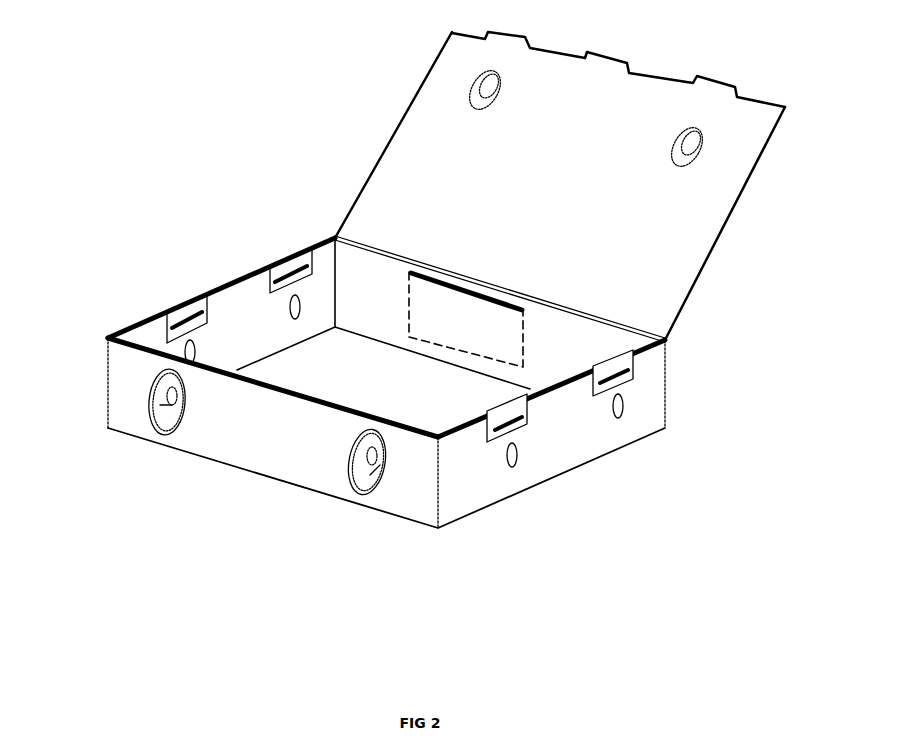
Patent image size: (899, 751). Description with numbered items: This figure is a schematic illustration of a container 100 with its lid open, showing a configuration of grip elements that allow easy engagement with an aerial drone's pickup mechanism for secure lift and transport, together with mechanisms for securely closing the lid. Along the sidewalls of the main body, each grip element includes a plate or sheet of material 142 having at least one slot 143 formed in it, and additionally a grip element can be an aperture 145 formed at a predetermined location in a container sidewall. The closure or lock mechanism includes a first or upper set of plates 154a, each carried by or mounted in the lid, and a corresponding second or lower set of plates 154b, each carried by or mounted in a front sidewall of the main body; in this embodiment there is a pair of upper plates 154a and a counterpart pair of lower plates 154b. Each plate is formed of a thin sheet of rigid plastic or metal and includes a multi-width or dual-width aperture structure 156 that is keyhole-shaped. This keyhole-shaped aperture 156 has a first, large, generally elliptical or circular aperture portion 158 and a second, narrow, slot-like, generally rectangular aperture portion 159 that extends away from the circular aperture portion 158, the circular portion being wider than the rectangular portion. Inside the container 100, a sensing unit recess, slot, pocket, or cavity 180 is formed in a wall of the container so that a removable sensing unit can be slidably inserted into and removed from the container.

The container 100 is at (100, 479).
The plate or sheet of material 142 is at (296, 262).
The slot 143 is at (280, 276).
The aperture 145 is at (290, 307).
The first or upper set of plates 154a is at (478, 99).
The second or lower set of plates 154b is at (187, 432).
The multi-width or dual-width aperture structure 156 is at (478, 97).
The generally elliptical/circular aperture portion 158 is at (480, 92).
The generally rectangular aperture portion 159 is at (490, 85).
The sensing unit recess, slot, pocket, or cavity 180 is at (473, 312).